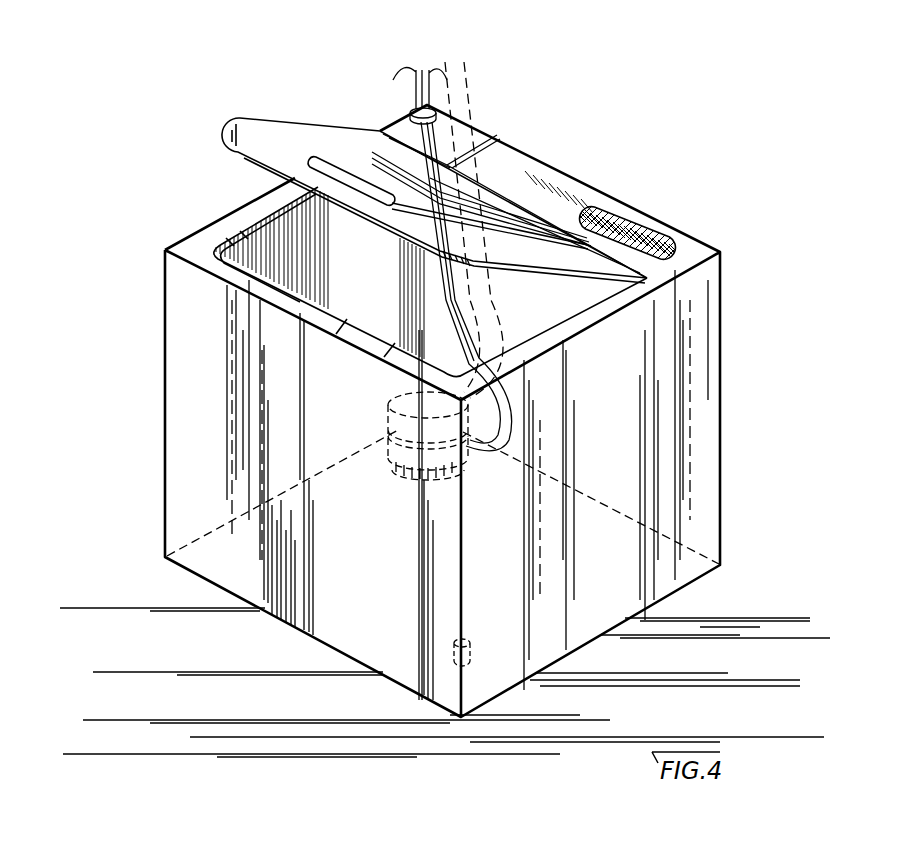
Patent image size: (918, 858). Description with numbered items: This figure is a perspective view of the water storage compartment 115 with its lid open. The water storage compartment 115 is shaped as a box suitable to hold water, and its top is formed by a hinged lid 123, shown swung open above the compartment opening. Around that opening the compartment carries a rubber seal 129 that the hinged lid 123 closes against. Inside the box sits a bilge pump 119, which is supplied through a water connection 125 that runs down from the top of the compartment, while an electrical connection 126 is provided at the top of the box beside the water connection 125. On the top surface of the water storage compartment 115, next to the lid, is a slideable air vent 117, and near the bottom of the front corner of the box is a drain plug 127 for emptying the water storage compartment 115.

The water storage compartment 115 is at (296, 432).
The slideable air vent 117 is at (632, 224).
The bilge pump 119 is at (400, 413).
The hinged lid 123 is at (288, 146).
The water connection 125 is at (481, 86).
The electrical connection 126 is at (411, 110).
The drain plug 127 is at (452, 650).
The rubber seal 129 is at (262, 231).